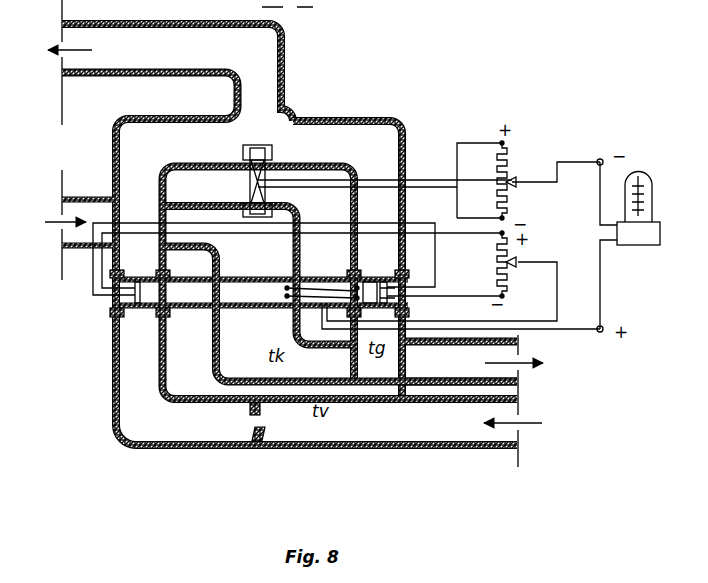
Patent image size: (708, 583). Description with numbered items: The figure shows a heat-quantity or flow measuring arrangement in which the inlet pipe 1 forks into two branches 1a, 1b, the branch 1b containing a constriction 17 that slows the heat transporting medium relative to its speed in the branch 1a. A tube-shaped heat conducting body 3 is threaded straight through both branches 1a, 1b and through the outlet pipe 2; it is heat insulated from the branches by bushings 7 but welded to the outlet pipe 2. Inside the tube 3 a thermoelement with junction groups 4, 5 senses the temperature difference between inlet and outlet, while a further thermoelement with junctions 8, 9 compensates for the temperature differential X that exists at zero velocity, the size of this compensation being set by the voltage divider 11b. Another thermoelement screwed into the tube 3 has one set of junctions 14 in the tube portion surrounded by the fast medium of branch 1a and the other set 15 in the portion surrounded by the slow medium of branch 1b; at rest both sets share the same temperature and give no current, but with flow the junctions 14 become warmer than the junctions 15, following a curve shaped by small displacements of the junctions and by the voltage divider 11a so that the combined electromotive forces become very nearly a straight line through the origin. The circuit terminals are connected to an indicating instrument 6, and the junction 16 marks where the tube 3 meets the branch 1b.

The inlet pipe 1 is at (476, 452).
The branch 1a is at (366, 117).
The branch 1b is at (150, 117).
The outlet pipe 2 is at (212, 342).
The heat conducting body 3 is at (261, 309).
The thermoelement junctions 4 is at (353, 287).
The thermoelement junctions 5 is at (283, 290).
The indicator lamp 6 is at (636, 245).
The bushings 7 is at (408, 278).
The compensating thermoelement junctions 8 is at (258, 146).
The compensating thermoelement junctions 9 is at (243, 211).
The voltage divider 11a is at (500, 255).
The voltage divider 11b is at (508, 160).
The set of junctions 14 is at (377, 282).
The set of junctions 15 is at (145, 293).
The pipe junction 16 is at (110, 310).
The constriction 17 is at (262, 411).